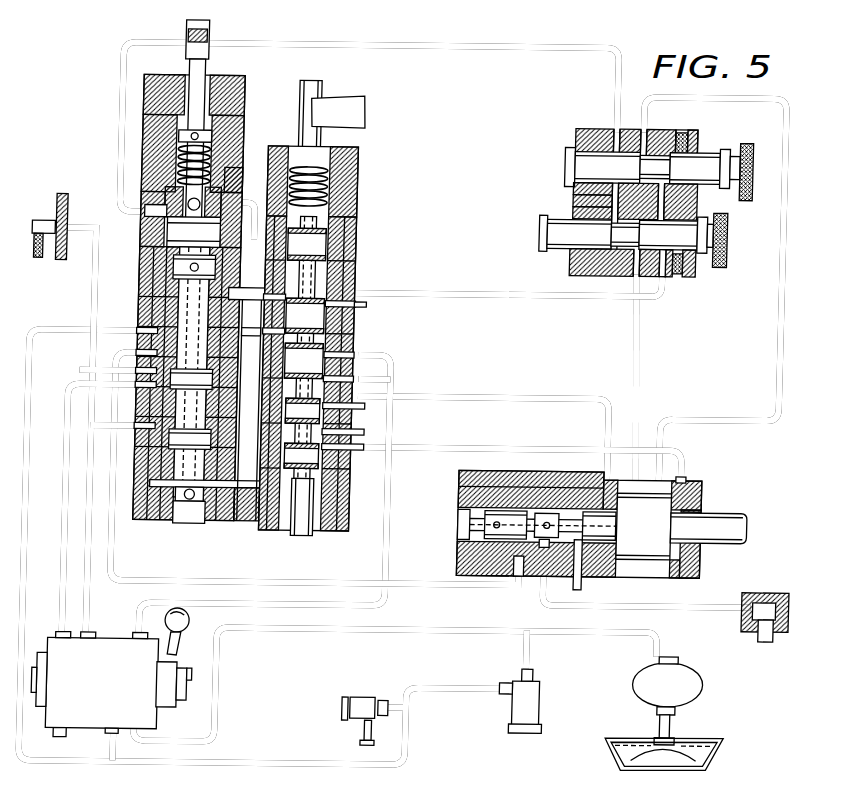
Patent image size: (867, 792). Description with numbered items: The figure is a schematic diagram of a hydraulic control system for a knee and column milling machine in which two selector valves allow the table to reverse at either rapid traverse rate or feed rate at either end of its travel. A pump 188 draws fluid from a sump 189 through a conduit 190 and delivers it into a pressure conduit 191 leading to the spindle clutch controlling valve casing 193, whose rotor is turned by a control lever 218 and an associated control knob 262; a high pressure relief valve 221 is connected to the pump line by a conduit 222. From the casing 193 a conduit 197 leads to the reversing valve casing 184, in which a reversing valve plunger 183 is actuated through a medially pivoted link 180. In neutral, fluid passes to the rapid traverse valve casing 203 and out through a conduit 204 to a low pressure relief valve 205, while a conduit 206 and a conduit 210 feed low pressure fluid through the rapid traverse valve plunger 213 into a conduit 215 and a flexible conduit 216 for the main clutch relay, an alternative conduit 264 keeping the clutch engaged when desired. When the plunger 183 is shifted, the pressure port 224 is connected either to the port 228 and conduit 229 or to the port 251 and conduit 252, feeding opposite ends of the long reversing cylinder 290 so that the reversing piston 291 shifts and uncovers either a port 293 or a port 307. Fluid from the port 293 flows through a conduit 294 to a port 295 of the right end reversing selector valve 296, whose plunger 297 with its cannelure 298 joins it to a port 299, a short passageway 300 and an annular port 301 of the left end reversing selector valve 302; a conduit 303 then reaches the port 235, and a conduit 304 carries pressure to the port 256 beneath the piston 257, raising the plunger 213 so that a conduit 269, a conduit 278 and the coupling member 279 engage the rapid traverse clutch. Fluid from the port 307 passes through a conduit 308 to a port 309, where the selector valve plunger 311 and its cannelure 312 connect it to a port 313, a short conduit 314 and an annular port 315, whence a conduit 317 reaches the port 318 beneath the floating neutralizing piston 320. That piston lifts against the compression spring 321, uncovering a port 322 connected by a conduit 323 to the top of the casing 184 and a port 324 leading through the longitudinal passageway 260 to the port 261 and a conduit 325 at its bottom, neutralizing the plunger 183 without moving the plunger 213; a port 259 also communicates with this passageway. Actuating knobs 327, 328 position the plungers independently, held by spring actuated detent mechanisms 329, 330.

The medially pivoted link 180 is at (340, 108).
The reversing valve plunger 183 is at (298, 106).
The reversing valve casing 184 is at (362, 262).
The pump 188 is at (705, 688).
The sump 189 is at (708, 750).
The conduit 190 is at (668, 728).
The conduit 191 is at (640, 632).
The spindle clutch controlling valve casing 193 is at (98, 645).
The conduit 197 is at (387, 553).
The rapid traverse valve casing 203 is at (215, 555).
The conduit 204 is at (128, 332).
The low pressure relief valve 205 is at (368, 697).
The conduit 206 is at (110, 750).
The conduit 210 is at (93, 597).
The rapid traverse valve plunger 213 is at (186, 535).
The conduit 215 is at (92, 300).
The flexible conduit 216 is at (42, 260).
The control lever 218 is at (190, 628).
The high pressure relief valve 221 is at (515, 708).
The conduit 222 is at (523, 651).
The pressure port 224 is at (371, 409).
The port 228 is at (371, 435).
The conduit 229 is at (505, 447).
The port 235 is at (362, 287).
The port 251 is at (390, 390).
The conduit 252 is at (507, 396).
The port 256 is at (253, 410).
The piston 257 is at (180, 245).
The port 259 is at (186, 268).
The longitudinal passageway 260 is at (148, 300).
The port 261 is at (215, 474).
The control knob 262 is at (192, 675).
The alternative conduit 264 is at (60, 566).
The conduit 269 is at (435, 585).
The conduit 278 is at (540, 605).
The coupling member 279 is at (770, 586).
The reversing cylinder 290 is at (522, 472).
The reversing piston 291 is at (682, 534).
The port 293 is at (690, 476).
The conduit 294 is at (778, 378).
The port 295 is at (678, 135).
The right end reversing selector valve 296 is at (598, 135).
The plunger 297 is at (578, 163).
The cannelure 298 is at (623, 168).
The port 299 is at (704, 169).
The short passageway 300 is at (686, 215).
The annular port 301 is at (715, 224).
The left end reversing selector valve 302 is at (572, 270).
The conduit 303 is at (482, 286).
The conduit 304 is at (250, 287).
The port 307 is at (570, 525).
The conduit 308 is at (640, 383).
The port 309 is at (629, 272).
The selector valve plunger 311 is at (545, 239).
The cannelure 312 is at (593, 234).
The port 313 is at (575, 215).
The short conduit 314 is at (570, 203).
The annular port 315 is at (570, 190).
The conduit 317 is at (562, 54).
The port 318 is at (168, 230).
The neutralizing piston 320 is at (172, 203).
The compression spring 321 is at (222, 160).
The port 322 is at (232, 180).
The conduit 323 is at (232, 192).
The port 324 is at (148, 212).
The conduit 325 is at (250, 520).
The actuating knob 327 is at (742, 150).
The actuating knob 328 is at (728, 240).
The spring actuated detent mechanism 329 is at (695, 140).
The spring actuated detent mechanism 330 is at (695, 270).